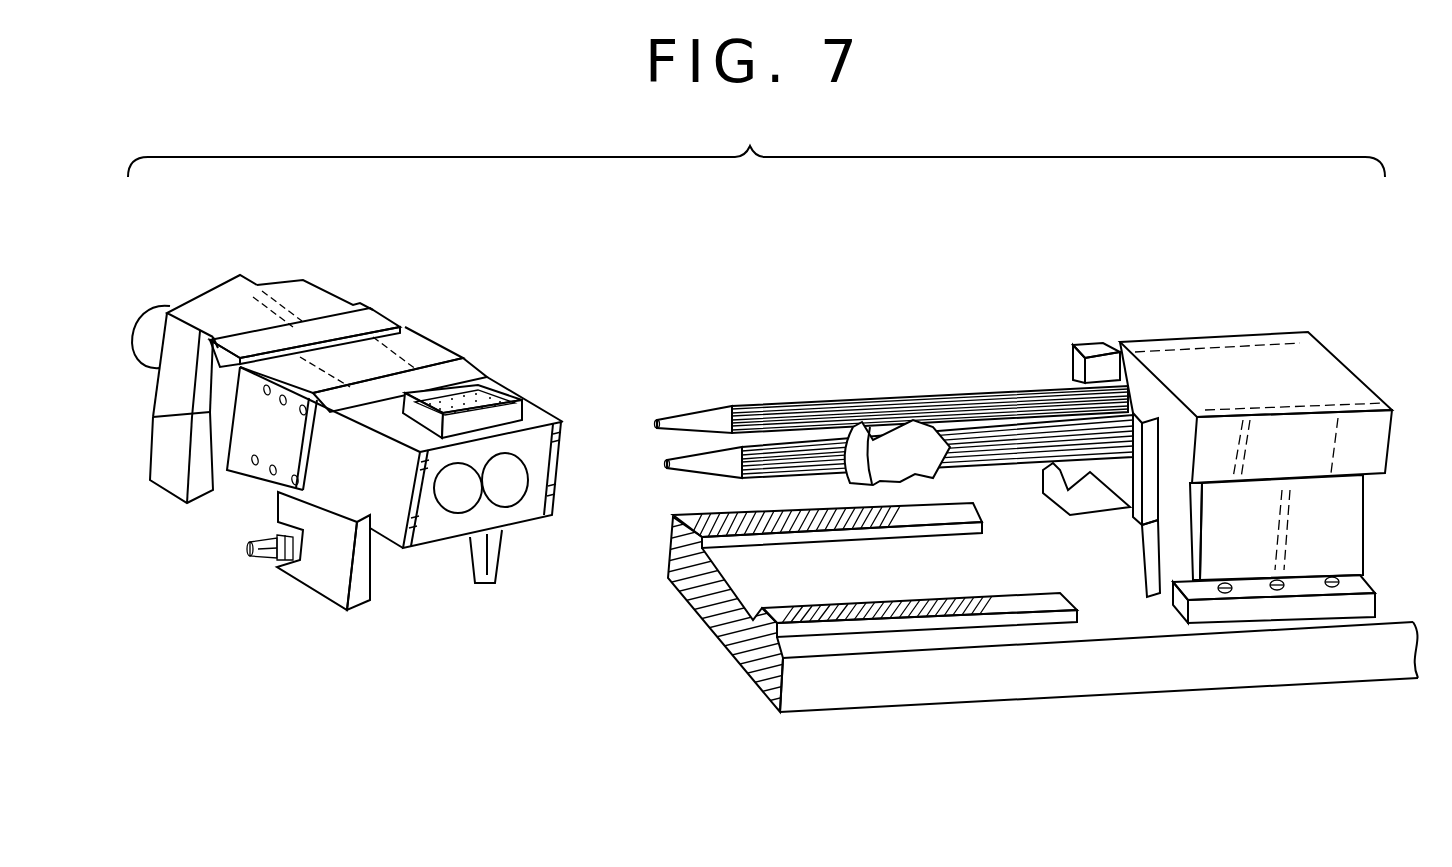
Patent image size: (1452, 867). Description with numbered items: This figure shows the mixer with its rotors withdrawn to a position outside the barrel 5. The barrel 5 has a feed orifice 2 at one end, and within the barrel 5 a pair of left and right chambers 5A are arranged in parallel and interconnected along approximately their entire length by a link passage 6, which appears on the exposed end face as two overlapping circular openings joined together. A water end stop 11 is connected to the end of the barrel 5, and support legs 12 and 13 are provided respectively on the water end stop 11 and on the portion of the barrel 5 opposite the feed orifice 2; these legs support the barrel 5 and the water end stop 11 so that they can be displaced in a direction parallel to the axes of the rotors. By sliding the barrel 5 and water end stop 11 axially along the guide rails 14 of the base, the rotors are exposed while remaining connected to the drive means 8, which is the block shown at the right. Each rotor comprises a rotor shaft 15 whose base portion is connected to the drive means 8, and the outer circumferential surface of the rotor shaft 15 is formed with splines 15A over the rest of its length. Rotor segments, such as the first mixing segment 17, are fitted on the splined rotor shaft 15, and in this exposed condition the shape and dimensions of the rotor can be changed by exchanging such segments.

The feed orifice 2 is at (483, 388).
The barrel 5 is at (412, 356).
The chambers 5A is at (447, 500).
The link passage 6 is at (477, 487).
The drive means 8 is at (1222, 363).
The water end stop 11 is at (216, 290).
The support leg 12 is at (173, 480).
The support leg 13 is at (330, 580).
The guide rail 14 is at (730, 533).
The rotor shaft 15 is at (878, 415).
The splines 15A is at (822, 410).
The first mixing segment 17 is at (912, 437).